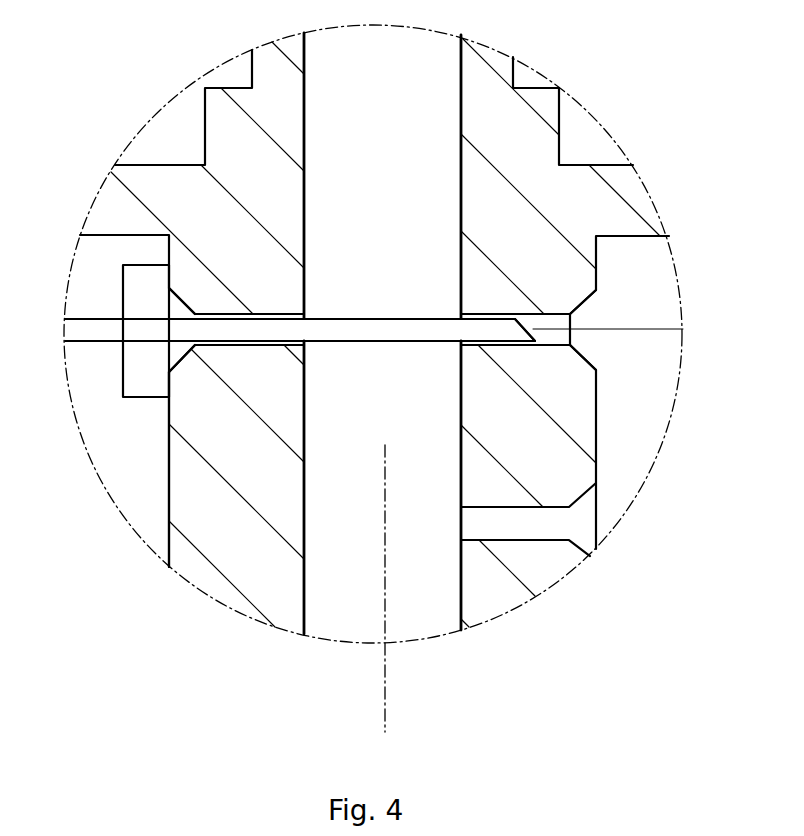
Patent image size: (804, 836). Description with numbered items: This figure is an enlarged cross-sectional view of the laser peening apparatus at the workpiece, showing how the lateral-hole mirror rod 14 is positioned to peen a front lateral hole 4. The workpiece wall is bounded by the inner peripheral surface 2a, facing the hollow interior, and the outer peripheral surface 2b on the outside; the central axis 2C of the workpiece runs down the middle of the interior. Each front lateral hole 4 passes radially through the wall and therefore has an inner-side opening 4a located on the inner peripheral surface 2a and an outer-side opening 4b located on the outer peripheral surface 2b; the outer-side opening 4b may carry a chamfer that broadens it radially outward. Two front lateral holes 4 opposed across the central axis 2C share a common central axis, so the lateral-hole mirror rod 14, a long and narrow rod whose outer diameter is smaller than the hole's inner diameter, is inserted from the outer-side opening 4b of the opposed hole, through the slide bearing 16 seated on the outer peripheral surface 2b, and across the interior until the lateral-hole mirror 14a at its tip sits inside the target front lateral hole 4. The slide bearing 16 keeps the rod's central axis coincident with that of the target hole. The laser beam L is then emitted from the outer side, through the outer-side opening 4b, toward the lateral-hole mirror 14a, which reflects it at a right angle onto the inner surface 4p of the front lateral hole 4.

The front lateral hole 4 is at (318, 305).
The inner peripheral surface 2a is at (305, 607).
The outer peripheral surface 2b is at (168, 505).
The slide bearing 16 is at (133, 298).
The lateral-hole mirror rod 14 is at (372, 335).
The lateral-hole mirror 14a is at (535, 338).
The outer-side opening 4b is at (168, 357).
The inner-side opening 4a is at (305, 345).
The inner surface 4p is at (553, 321).
The laser beam L is at (663, 328).
The central axis 2C is at (387, 710).